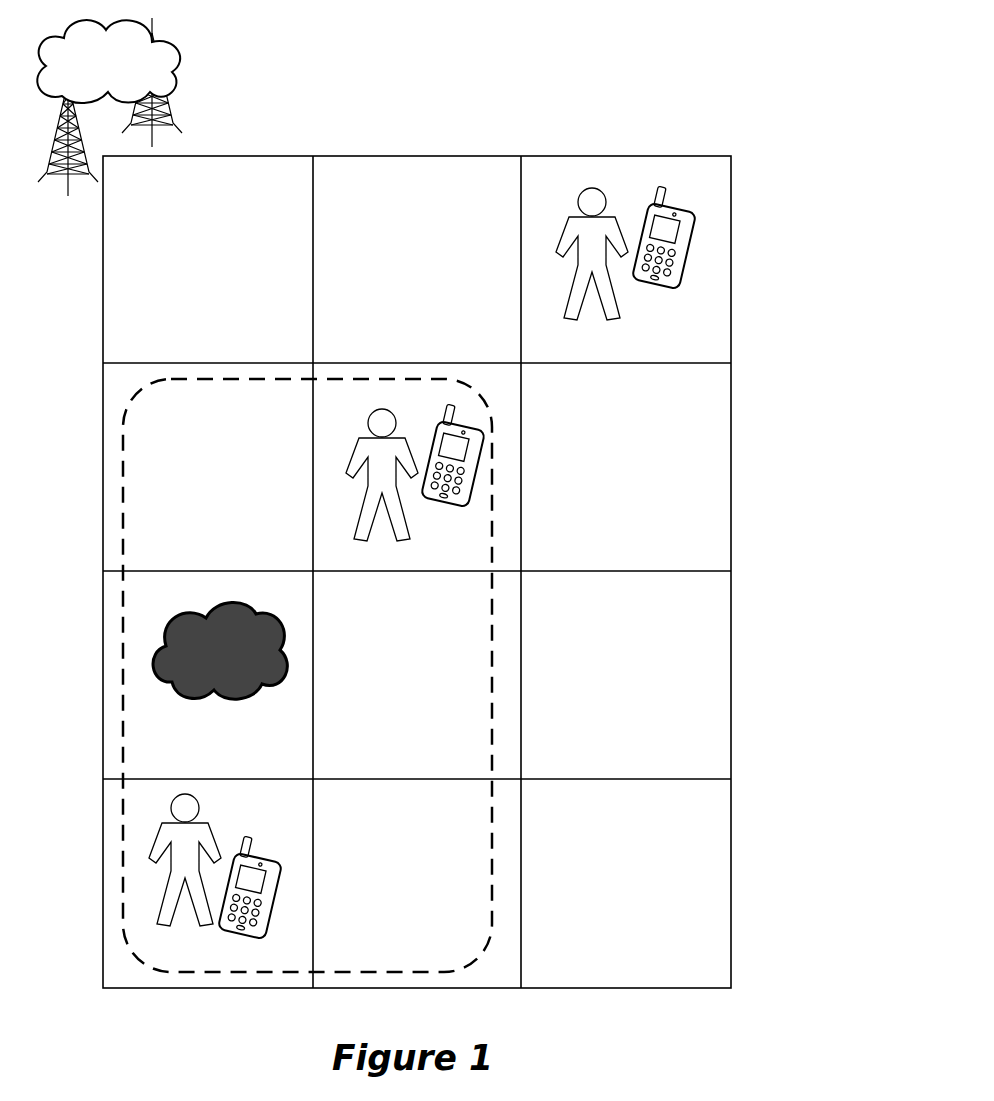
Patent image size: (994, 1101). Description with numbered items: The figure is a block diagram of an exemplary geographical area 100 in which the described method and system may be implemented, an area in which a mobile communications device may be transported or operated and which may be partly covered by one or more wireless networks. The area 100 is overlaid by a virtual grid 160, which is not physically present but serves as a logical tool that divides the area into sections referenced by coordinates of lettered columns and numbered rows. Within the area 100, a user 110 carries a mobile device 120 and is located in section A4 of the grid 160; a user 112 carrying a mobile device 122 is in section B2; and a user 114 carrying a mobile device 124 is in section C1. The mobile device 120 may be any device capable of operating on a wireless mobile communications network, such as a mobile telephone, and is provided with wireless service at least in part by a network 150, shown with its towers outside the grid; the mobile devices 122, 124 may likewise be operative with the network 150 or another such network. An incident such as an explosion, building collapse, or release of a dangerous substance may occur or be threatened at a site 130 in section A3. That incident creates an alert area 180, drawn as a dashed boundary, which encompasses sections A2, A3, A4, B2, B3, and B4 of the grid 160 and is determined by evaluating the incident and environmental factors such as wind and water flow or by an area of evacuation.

The area 100 is at (768, 119).
The user 110 is at (185, 871).
The user 112 is at (382, 487).
The user 114 is at (592, 266).
The mobile device 120 is at (252, 903).
The mobile device 122 is at (455, 471).
The mobile device 124 is at (666, 250).
The site 130 is at (220, 664).
The network 150 is at (109, 107).
The virtual grid 160 is at (742, 302).
The alert area 180 is at (114, 635).